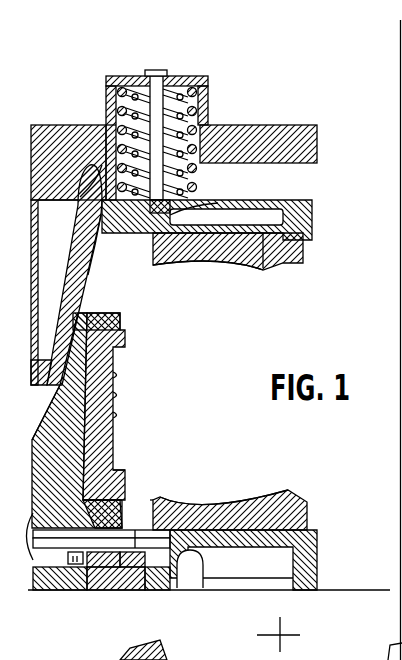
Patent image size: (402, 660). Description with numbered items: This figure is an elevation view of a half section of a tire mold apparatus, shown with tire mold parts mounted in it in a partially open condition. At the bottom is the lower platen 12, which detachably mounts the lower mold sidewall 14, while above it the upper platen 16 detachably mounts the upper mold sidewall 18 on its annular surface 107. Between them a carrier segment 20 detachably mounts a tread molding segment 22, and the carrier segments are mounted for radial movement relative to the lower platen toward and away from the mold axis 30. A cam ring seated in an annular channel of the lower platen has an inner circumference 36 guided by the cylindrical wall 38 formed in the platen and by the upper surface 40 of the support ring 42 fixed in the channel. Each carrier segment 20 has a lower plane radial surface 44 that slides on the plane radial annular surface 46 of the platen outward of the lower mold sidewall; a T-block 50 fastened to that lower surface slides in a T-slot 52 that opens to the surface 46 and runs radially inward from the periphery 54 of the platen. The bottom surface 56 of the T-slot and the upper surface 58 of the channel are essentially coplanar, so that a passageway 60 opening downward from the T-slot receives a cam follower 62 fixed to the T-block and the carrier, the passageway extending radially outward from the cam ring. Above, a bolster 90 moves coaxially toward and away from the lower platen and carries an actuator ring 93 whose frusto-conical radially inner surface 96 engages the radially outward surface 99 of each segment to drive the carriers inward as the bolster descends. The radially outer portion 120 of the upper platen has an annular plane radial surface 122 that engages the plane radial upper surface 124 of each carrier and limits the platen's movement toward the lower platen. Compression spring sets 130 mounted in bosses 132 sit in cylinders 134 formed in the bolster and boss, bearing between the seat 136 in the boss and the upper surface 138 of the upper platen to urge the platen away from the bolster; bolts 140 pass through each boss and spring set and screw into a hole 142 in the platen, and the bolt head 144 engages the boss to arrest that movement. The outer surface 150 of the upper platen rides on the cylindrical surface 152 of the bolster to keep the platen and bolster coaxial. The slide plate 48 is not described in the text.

The lower platen 12 is at (318, 550).
The lower mold sidewall 14 is at (300, 502).
The upper platen 16 is at (312, 218).
The upper mold sidewall 18 is at (303, 252).
The carrier segment 20 is at (75, 438).
The tread molding segment 22 is at (114, 391).
The axis 30 is at (300, 635).
The inner circumference 36 is at (203, 578).
The cylindrical wall 38 is at (124, 591).
The upper surface 40 is at (98, 590).
The support ring 42 is at (121, 592).
The lower plane radial surface 44 is at (65, 532).
The plane radial annular surface 46 is at (136, 530).
The slide 48 is at (101, 539).
The T-block 50 is at (82, 530).
The T-slot 52 is at (188, 507).
The periphery 54 is at (33, 577).
The bottom surface 56 is at (155, 505).
The upper surface 58 is at (113, 592).
The passageway 60 is at (33, 565).
The cam follower 62 is at (121, 528).
The bolster 90 is at (313, 150).
The actuator ring 93 is at (88, 253).
The radially inner surface 96 is at (90, 272).
The radially outward surface 99 is at (42, 428).
The annular surface 107 is at (263, 267).
The radially outer portion 120 is at (150, 252).
The annular plane radial surface 122 is at (84, 229).
The plane radial upper surface 124 is at (92, 313).
The compression spring set 130 is at (205, 104).
The boss 132 is at (182, 80).
The cylinder 134 is at (110, 128).
The seat 136 is at (127, 92).
The upper surface 138 is at (253, 200).
The bolt 140 is at (157, 90).
The hole 142 is at (220, 201).
The bolt head 144 is at (160, 70).
The outer surface 150 is at (75, 181).
The cylindrical surface 152 is at (102, 163).